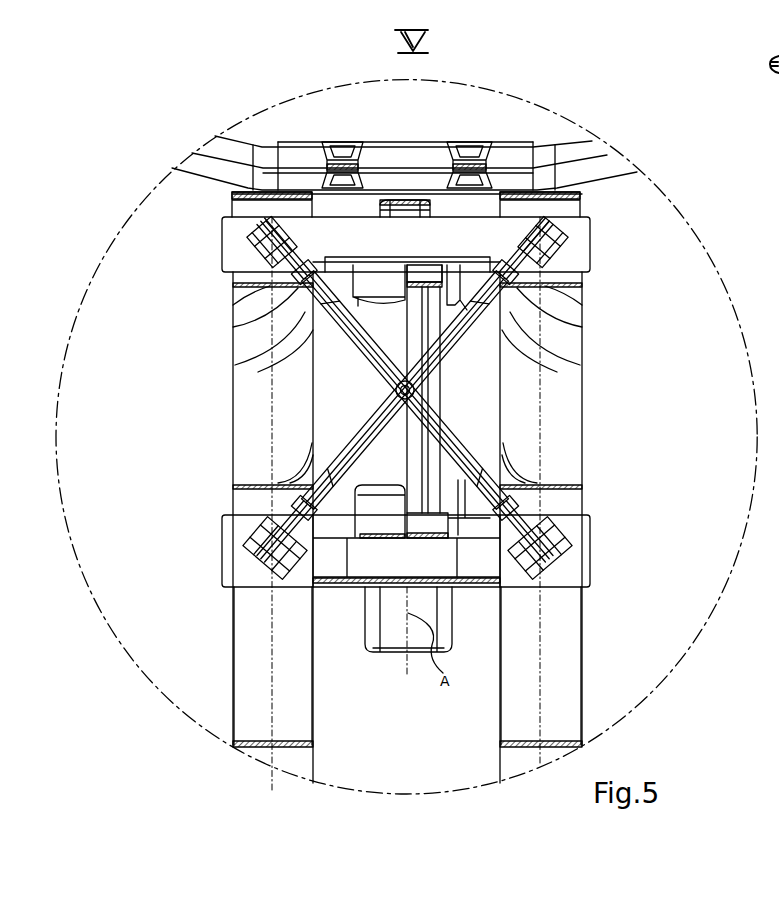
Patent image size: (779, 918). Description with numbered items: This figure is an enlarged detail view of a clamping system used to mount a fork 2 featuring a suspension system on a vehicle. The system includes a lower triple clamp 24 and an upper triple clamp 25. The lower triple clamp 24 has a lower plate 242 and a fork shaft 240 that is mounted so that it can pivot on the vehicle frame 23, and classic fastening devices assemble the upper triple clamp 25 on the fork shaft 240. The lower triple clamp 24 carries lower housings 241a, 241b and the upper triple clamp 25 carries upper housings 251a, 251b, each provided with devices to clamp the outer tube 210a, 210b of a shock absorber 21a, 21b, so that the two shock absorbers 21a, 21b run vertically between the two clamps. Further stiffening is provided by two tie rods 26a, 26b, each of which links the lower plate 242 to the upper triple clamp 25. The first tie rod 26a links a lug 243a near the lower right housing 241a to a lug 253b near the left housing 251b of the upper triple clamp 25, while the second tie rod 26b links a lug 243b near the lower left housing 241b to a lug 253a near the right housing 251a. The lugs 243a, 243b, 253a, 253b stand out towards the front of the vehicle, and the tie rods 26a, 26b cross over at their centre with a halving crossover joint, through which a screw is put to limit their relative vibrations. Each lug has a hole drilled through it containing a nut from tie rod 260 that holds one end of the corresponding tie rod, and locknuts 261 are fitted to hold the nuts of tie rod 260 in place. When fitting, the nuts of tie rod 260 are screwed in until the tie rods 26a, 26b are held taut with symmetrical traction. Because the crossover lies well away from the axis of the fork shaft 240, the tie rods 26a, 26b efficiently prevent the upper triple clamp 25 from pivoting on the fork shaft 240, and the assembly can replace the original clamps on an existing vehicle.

The fork 2 is at (152, 428).
The upper triple clamp 25 is at (345, 232).
The lug 253a is at (235, 268).
The lug 253b is at (570, 262).
The upper housing 251a is at (237, 303).
The upper housing 251b is at (555, 300).
The nut from tie rod 260 is at (265, 310).
The locknut 261 is at (273, 355).
The outer tube 210a is at (258, 433).
The outer tube 210b is at (553, 390).
The fork shaft 240 is at (437, 360).
The vehicle frame 23 is at (372, 378).
The first tie rod 26a is at (370, 414).
The second tie rod 26b is at (435, 430).
The lug 243a is at (255, 525).
The lug 243b is at (583, 560).
The lower triple clamp 24 is at (605, 548).
The lower plate 242 is at (373, 558).
The lower housing 241a is at (270, 595).
The lower housing 241b is at (553, 600).
The shock absorber 21a is at (290, 740).
The shock absorber 21b is at (530, 740).